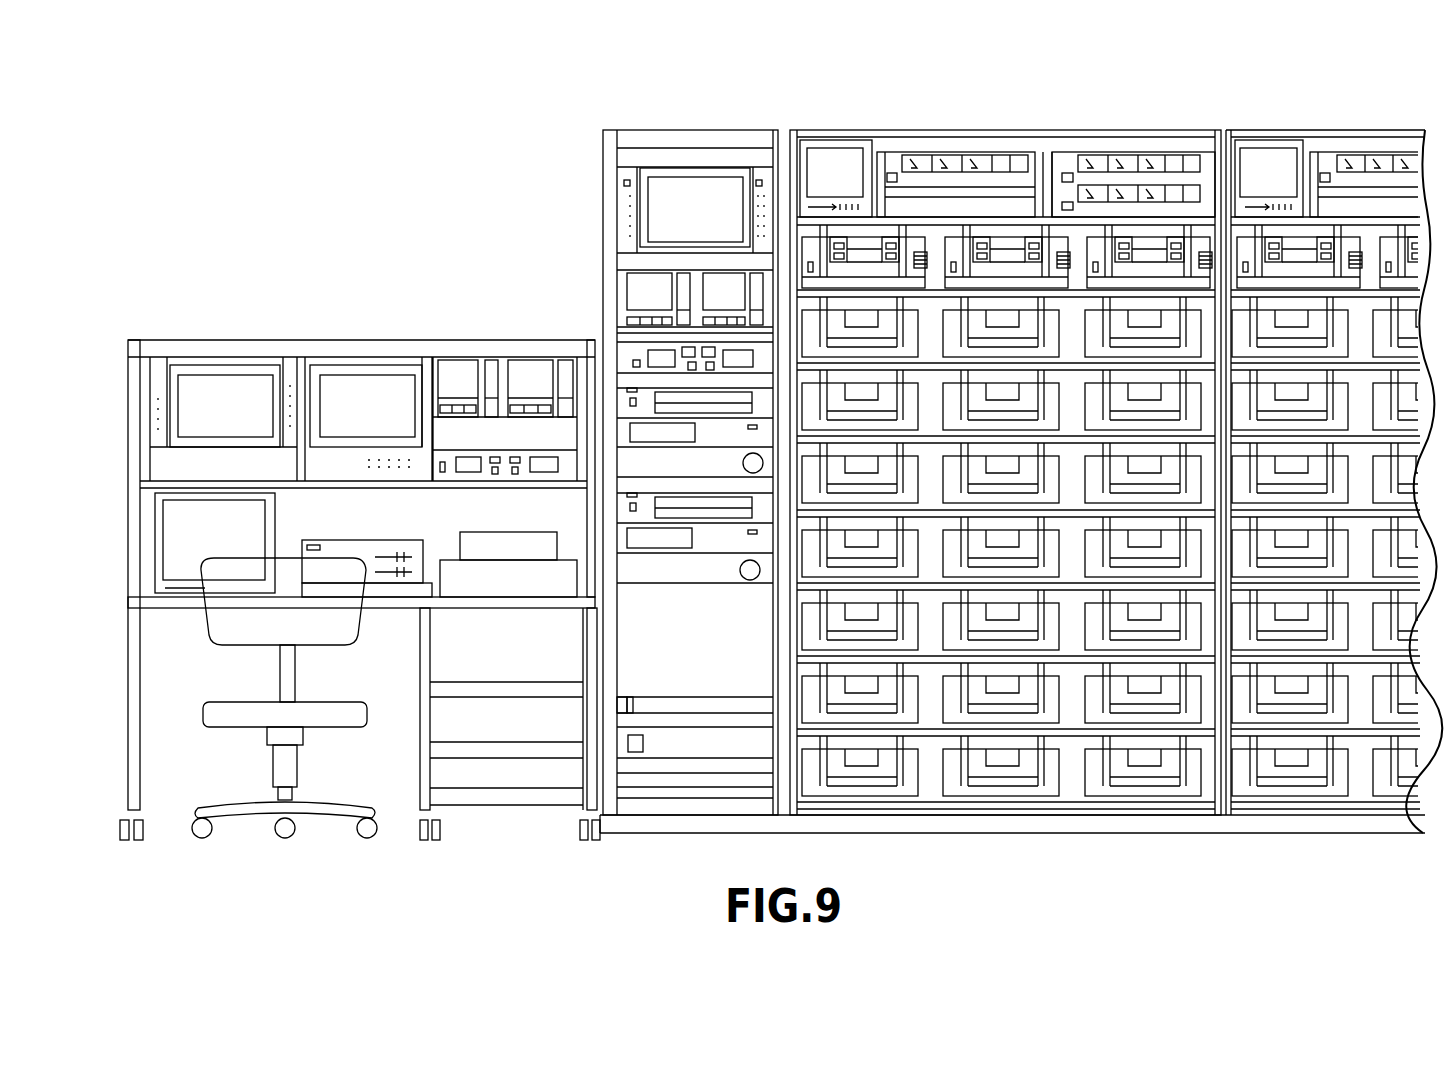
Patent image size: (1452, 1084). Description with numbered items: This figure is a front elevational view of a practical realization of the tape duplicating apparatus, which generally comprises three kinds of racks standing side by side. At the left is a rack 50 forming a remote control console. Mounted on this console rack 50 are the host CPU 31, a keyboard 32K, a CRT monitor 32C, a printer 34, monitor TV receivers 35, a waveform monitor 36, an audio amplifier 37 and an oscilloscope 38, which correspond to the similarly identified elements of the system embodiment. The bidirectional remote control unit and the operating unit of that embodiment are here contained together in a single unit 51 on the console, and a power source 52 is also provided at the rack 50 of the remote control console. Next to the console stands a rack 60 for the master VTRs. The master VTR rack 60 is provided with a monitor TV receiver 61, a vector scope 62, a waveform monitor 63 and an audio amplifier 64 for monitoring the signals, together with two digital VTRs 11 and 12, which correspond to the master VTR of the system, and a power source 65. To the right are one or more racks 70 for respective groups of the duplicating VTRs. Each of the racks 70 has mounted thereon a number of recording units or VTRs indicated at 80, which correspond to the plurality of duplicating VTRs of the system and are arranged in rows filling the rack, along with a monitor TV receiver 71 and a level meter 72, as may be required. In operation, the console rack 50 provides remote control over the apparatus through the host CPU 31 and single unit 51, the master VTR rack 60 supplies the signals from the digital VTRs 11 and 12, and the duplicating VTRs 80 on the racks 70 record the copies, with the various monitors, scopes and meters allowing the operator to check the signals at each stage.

The digital VTR 11 is at (686, 467).
The digital VTR 12 is at (706, 572).
The host CPU 31 is at (398, 567).
The CRT monitor 32C is at (195, 527).
The keyboard 32K is at (192, 588).
The printer 34 is at (473, 578).
The monitor TV receivers 35 is at (243, 385).
The waveform monitor 36 is at (468, 382).
The audio amplifier 37 is at (547, 455).
The oscilloscope 38 is at (528, 382).
The rack 50 is at (135, 567).
The single unit 51 is at (372, 593).
The power source 52 is at (507, 773).
The rack 60 is at (612, 145).
The monitor TV receiver 61 is at (696, 187).
The vector scope 62 is at (640, 287).
The waveform monitor 63 is at (728, 285).
The audio amplifier 64 is at (703, 365).
The power source 65 is at (633, 745).
The racks 70 is at (925, 130).
The monitor TV receiver 71 is at (836, 165).
The level meter 72 is at (980, 158).
The recording units 80 is at (1147, 300).